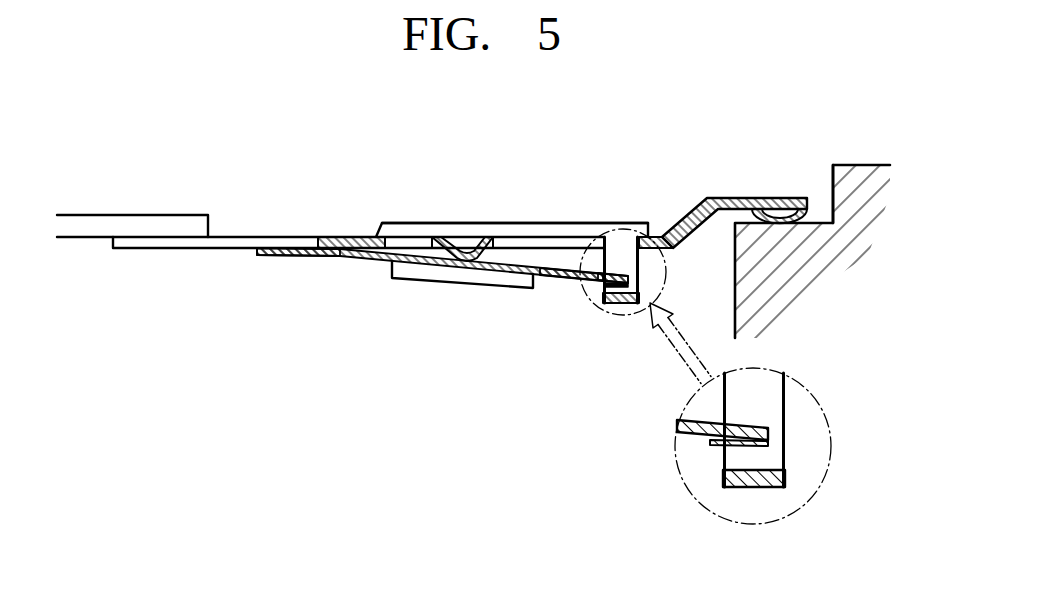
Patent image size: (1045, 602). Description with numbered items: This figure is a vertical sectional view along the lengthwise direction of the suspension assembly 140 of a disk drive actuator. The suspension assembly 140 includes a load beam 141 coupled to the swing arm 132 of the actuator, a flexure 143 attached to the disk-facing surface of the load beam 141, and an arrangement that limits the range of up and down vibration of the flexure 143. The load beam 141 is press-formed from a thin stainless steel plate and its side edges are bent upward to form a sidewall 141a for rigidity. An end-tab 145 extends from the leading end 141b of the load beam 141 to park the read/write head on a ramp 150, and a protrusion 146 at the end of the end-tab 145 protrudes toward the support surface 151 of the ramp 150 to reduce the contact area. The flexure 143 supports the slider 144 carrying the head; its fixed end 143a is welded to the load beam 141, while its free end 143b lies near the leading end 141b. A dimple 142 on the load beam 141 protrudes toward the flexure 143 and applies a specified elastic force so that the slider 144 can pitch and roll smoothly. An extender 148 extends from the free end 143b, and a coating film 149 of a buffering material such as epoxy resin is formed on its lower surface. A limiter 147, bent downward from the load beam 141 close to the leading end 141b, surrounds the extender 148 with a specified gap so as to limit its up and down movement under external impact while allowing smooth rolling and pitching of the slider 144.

The swing arm 132 is at (128, 226).
The suspension assembly 140 is at (388, 190).
The load beam 141 is at (319, 237).
The sidewall 141a is at (548, 232).
The leading end 141b is at (662, 236).
The dimple 142 is at (467, 237).
The flexure 143 is at (418, 266).
The fixed end 143a is at (303, 257).
The free end 143b is at (567, 275).
The slider 144 is at (462, 289).
The end-tab 145 is at (733, 199).
The protrusion 146 is at (781, 211).
The limiter 147 is at (622, 305).
The extender 148 is at (620, 273).
The coating film 149 is at (626, 284).
The ramp 150 is at (808, 245).
The support surface 151 is at (822, 221).